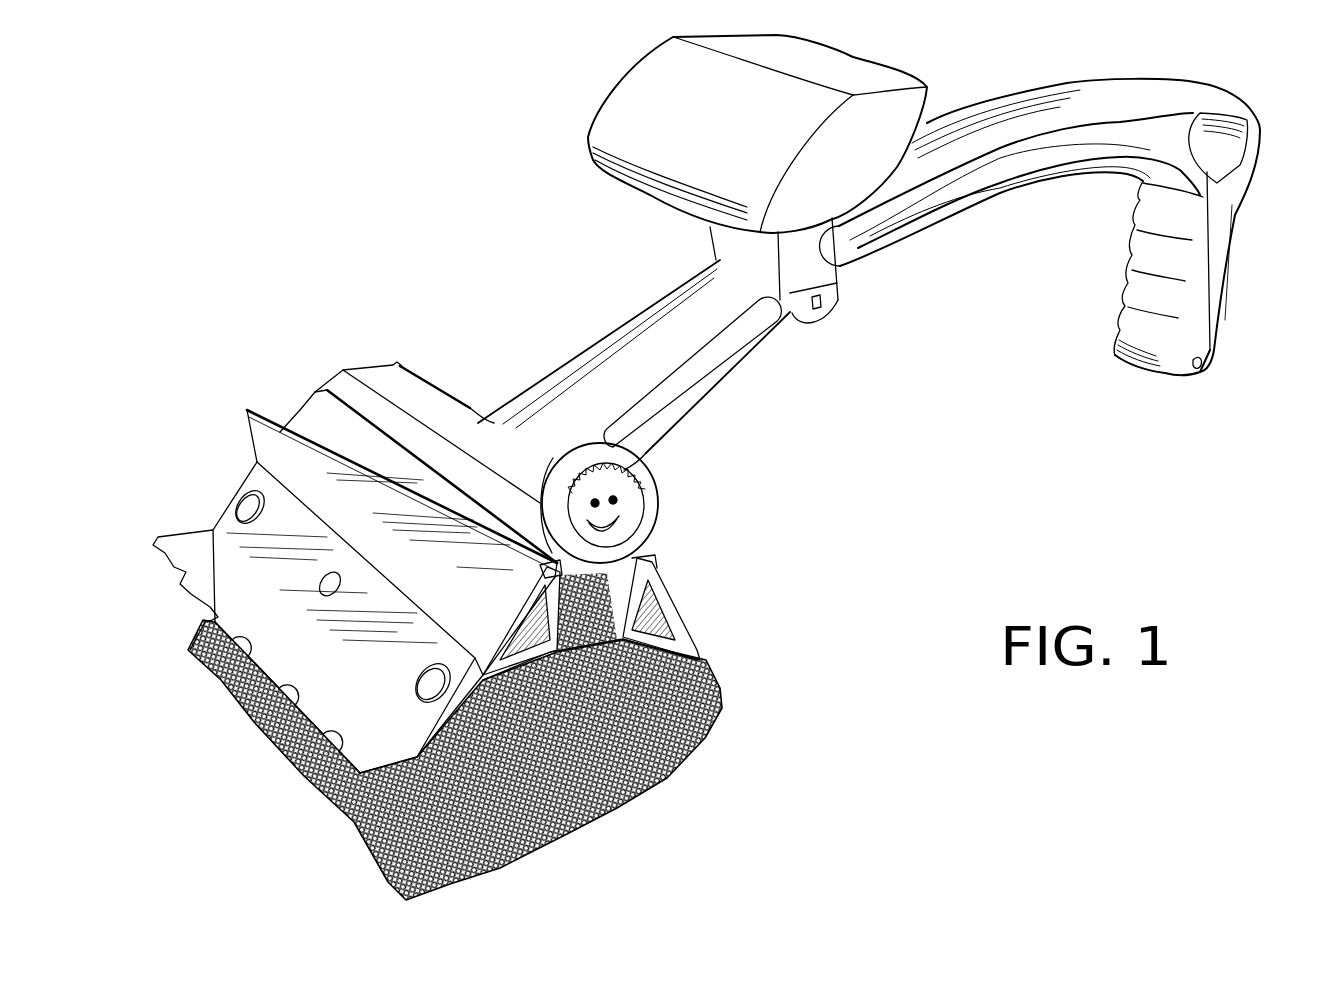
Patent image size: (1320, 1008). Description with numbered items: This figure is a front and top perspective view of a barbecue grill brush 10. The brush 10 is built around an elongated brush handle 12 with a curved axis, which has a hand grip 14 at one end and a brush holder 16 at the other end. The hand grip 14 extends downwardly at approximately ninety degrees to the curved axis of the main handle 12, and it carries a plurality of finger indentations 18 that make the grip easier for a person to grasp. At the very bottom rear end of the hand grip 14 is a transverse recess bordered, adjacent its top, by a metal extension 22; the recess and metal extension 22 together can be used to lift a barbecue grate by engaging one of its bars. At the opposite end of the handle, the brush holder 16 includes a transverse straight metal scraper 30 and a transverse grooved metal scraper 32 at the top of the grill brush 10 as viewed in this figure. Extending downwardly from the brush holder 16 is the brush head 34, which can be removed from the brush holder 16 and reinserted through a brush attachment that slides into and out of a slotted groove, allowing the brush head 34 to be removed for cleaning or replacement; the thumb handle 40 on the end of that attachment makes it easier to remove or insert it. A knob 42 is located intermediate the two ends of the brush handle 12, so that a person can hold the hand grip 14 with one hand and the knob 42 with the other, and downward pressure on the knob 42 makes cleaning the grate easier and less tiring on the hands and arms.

The brush 10 is at (357, 200).
The brush handle 12 is at (903, 217).
The hand grip 14 is at (1200, 273).
The brush holder 16 is at (445, 420).
The finger indentations 18 is at (1143, 280).
The metal extension 22 is at (1197, 367).
The straight metal scraper 30 is at (270, 452).
The grooved metal scraper 32 is at (183, 573).
The brush head 34 is at (700, 673).
The thumb handle 40 is at (643, 497).
The knob 42 is at (840, 67).